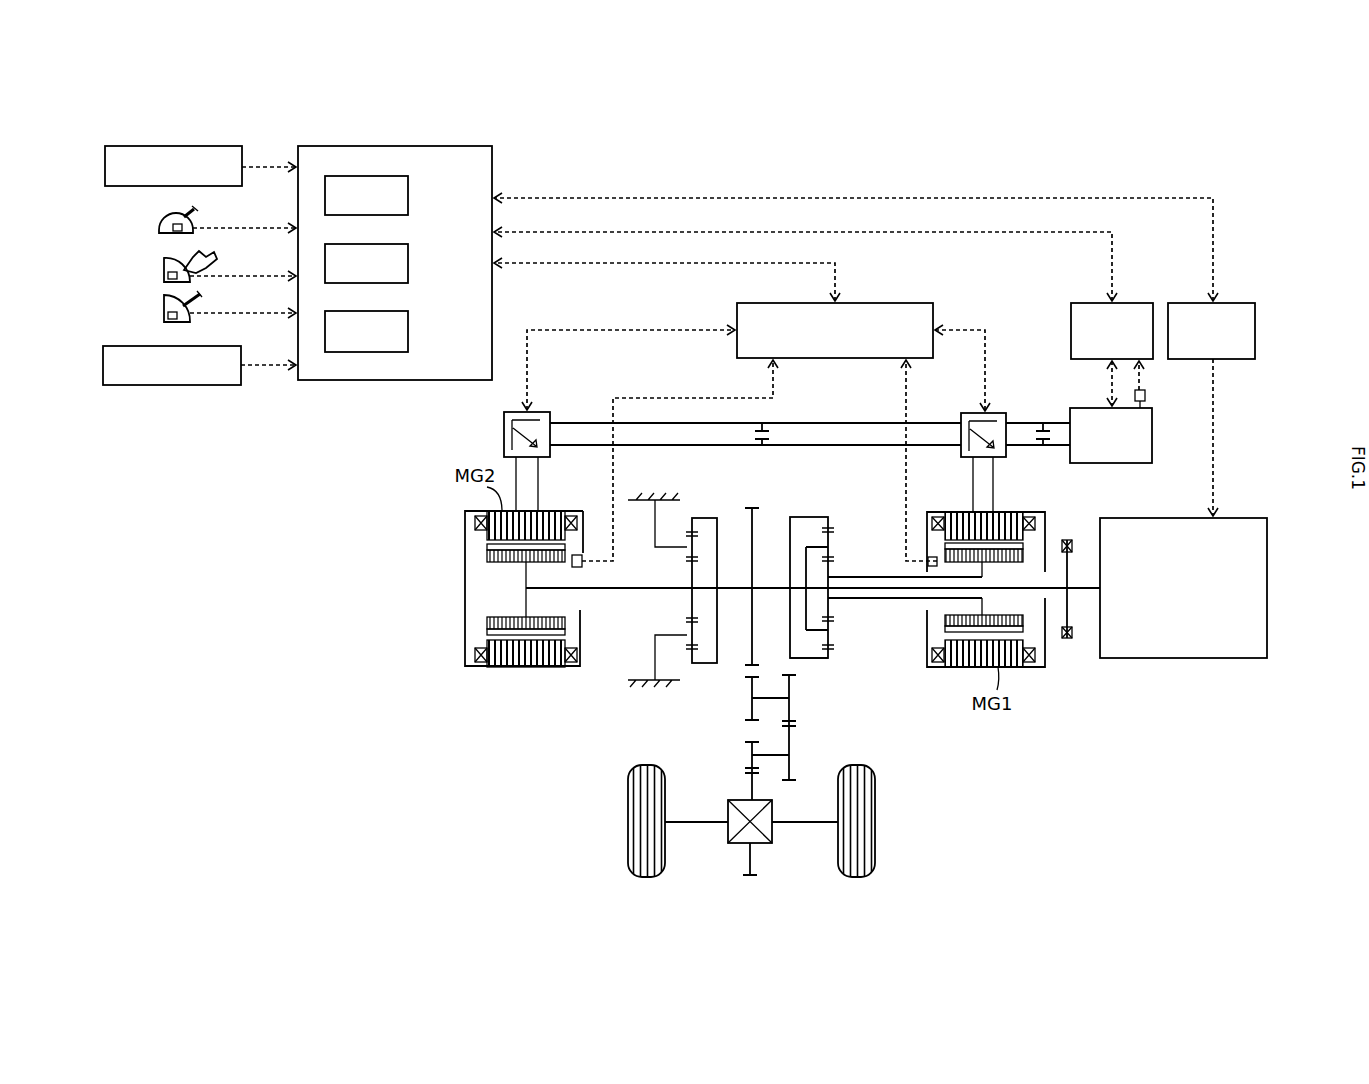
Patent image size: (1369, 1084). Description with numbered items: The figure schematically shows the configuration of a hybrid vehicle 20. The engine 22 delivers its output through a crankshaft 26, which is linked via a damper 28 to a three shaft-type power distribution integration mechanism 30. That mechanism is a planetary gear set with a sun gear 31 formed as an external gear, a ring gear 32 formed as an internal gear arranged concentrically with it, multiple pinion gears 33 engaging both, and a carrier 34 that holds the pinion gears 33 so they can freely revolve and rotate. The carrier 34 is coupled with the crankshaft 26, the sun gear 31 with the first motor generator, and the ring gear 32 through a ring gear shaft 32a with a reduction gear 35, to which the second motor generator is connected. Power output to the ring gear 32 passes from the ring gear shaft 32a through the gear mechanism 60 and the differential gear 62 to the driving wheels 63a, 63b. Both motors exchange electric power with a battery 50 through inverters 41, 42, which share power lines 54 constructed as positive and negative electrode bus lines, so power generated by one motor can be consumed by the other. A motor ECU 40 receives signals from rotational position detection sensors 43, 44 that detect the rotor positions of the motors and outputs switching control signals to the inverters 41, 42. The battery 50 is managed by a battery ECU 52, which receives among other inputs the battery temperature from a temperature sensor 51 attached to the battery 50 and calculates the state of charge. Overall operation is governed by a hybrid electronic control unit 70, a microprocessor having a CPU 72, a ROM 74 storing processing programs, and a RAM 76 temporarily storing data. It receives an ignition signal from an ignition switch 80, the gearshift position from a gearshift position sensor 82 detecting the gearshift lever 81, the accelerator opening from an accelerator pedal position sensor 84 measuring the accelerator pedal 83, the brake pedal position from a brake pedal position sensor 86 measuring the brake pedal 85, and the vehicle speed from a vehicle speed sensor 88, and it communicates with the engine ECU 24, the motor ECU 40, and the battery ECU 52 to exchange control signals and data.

The hybrid vehicle 20 is at (1019, 174).
The engine 22 is at (1267, 550).
The engine ECU 24 is at (1232, 303).
The crankshaft 26 is at (1082, 590).
The damper 28 is at (1070, 640).
The power distribution integration mechanism 30 is at (834, 503).
The sun gear 31 is at (830, 603).
The ring gear 32 is at (830, 653).
The ring gear shaft 32a is at (737, 587).
The pinion gears 33 is at (830, 628).
The carrier 34 is at (802, 553).
The reduction gear 35 is at (695, 496).
The motor ECU 40 is at (877, 303).
The inverter 41 is at (1003, 413).
The inverter 42 is at (537, 411).
The rotational position detection sensor 43 is at (930, 555).
The rotational position detection sensor 44 is at (580, 553).
The battery 50 is at (1112, 463).
The temperature sensor 51 is at (1146, 395).
The battery ECU 52 is at (1071, 302).
The power lines 54 is at (817, 444).
The gear mechanism 60 is at (832, 737).
The differential gear 62 is at (773, 832).
The driving wheel 63a is at (627, 853).
The driving wheel 63b is at (876, 853).
The hybrid electronic control unit 70 is at (395, 146).
The CPU 72 is at (410, 197).
The ROM 74 is at (410, 264).
The RAM 76 is at (410, 333).
The ignition switch 80 is at (105, 160).
The gearshift lever 81 is at (188, 212).
The gearshift position sensor 82 is at (172, 227).
The accelerator pedal 83 is at (196, 262).
The accelerator pedal position sensor 84 is at (168, 275).
The brake pedal 85 is at (182, 300).
The brake pedal position sensor 86 is at (168, 316).
The vehicle speed sensor 88 is at (103, 360).